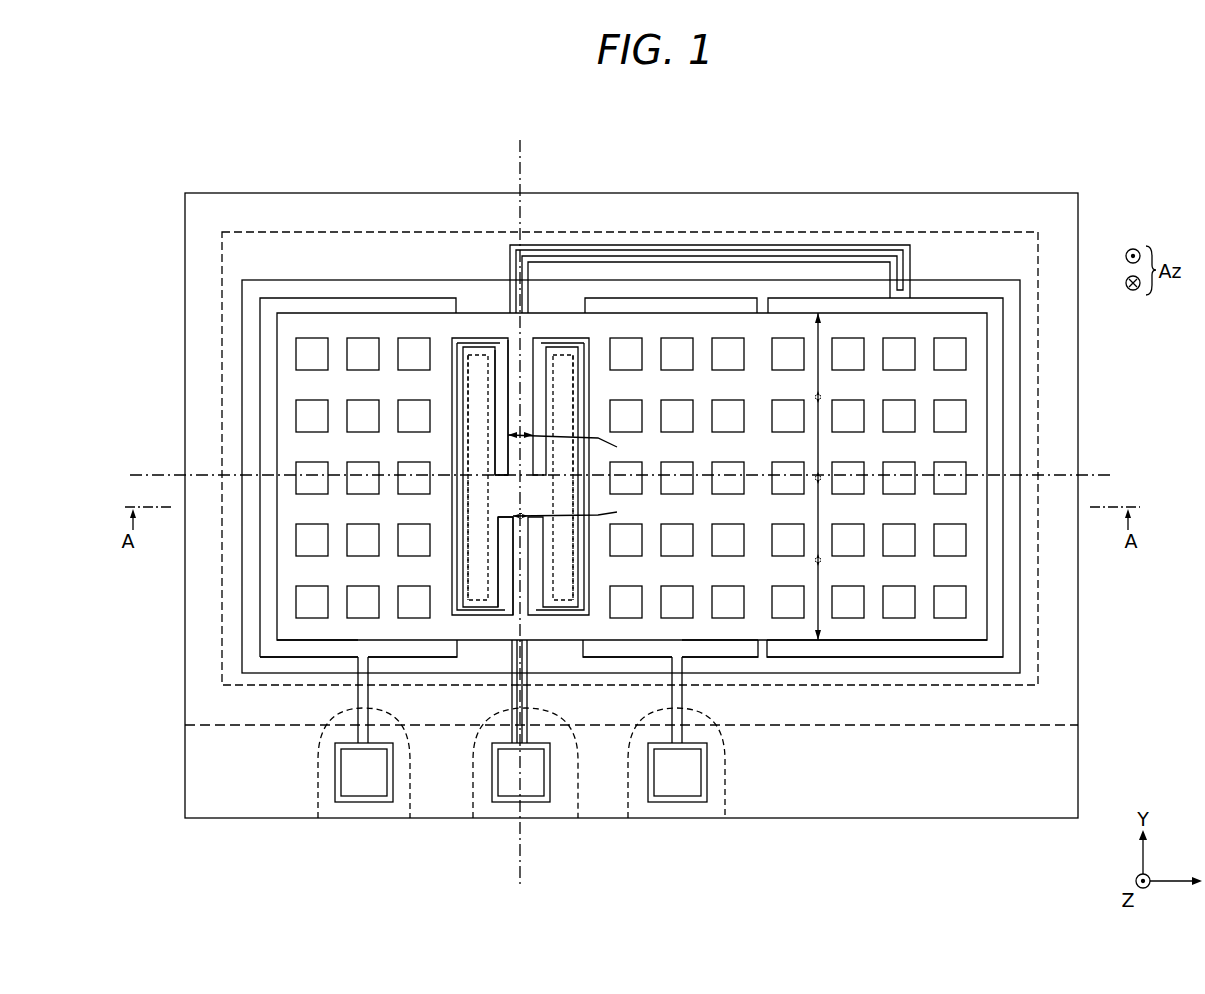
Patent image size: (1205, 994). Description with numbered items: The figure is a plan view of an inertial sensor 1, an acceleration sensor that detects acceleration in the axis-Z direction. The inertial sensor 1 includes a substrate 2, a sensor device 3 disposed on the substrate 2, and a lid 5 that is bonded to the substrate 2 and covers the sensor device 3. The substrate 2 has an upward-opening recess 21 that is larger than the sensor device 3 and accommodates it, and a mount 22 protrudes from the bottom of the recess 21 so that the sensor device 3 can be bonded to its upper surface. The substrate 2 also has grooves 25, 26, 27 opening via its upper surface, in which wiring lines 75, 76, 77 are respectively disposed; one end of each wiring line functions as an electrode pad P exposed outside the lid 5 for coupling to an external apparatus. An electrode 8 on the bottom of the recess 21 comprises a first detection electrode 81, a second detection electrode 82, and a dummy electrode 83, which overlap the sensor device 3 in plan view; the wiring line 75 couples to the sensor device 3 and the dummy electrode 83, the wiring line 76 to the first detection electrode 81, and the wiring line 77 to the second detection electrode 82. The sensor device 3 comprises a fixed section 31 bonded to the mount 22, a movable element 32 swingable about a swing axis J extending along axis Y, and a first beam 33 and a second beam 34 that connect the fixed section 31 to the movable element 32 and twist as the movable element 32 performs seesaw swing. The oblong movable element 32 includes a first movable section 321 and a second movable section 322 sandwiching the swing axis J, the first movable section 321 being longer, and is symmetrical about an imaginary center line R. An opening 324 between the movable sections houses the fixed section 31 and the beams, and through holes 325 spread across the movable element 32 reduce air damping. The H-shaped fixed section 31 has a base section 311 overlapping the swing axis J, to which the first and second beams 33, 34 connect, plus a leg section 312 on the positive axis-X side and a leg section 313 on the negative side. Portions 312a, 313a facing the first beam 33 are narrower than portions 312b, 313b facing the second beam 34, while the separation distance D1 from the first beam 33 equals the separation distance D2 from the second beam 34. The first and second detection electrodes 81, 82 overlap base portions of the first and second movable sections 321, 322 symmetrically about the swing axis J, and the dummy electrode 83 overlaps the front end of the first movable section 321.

The inertial sensor 1 is at (1066, 167).
The substrate 2 is at (1047, 819).
The sensor device 3 is at (605, 306).
The lid 5 is at (462, 290).
The electrode 8 is at (623, 783).
The recess 21 is at (968, 675).
The mount 22 is at (468, 336).
The groove 25 is at (515, 650).
The groove 26 is at (672, 702).
The groove 27 is at (358, 702).
The fixed section 31 is at (299, 495).
The movable element 32 is at (630, 390).
The first beam 33 is at (612, 510).
The second beam 34 is at (516, 574).
The wiring line 75 is at (544, 568).
The wiring line 76 is at (707, 746).
The wiring line 77 is at (393, 762).
The first detection electrode 81 is at (728, 645).
The second detection electrode 82 is at (297, 645).
The dummy electrode 83 is at (893, 645).
The base section 311 is at (510, 500).
The leg section 312 is at (624, 510).
The portion 312a is at (591, 397).
The portion 312b is at (592, 590).
The leg section 313 is at (296, 392).
The portion 313a is at (456, 398).
The portion 313b is at (462, 588).
The first movable section 321 is at (963, 384).
The second movable section 322 is at (290, 386).
The opening 324 is at (494, 345).
The through holes 325 is at (293, 541).
The electrode pad P is at (365, 775).
The swing axis J is at (514, 497).
The imaginary center line R is at (629, 475).
The separation distance D1 is at (575, 445).
The separation distance D2 is at (578, 512).